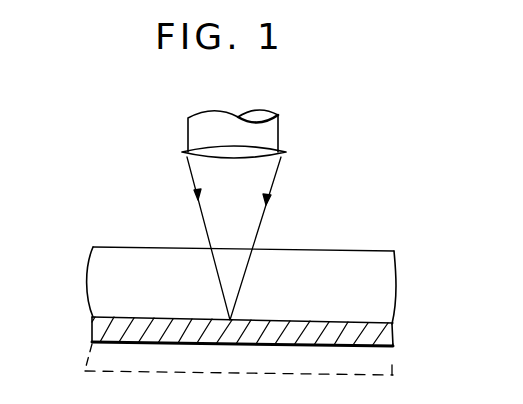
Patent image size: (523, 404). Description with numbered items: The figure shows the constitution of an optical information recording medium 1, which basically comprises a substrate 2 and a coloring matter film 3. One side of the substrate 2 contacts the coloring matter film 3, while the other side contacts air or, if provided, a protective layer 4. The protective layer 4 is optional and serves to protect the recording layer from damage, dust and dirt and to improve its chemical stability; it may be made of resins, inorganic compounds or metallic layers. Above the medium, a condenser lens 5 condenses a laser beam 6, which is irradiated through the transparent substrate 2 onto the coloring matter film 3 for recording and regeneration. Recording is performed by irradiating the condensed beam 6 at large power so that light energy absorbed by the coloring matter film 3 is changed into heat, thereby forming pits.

The recording medium 1 is at (354, 247).
The substrate 2 is at (384, 287).
The coloring matter film 3 is at (386, 337).
The protective layer 4 is at (385, 369).
The condenser lens 5 is at (285, 152).
The laser beam 6 is at (270, 184).